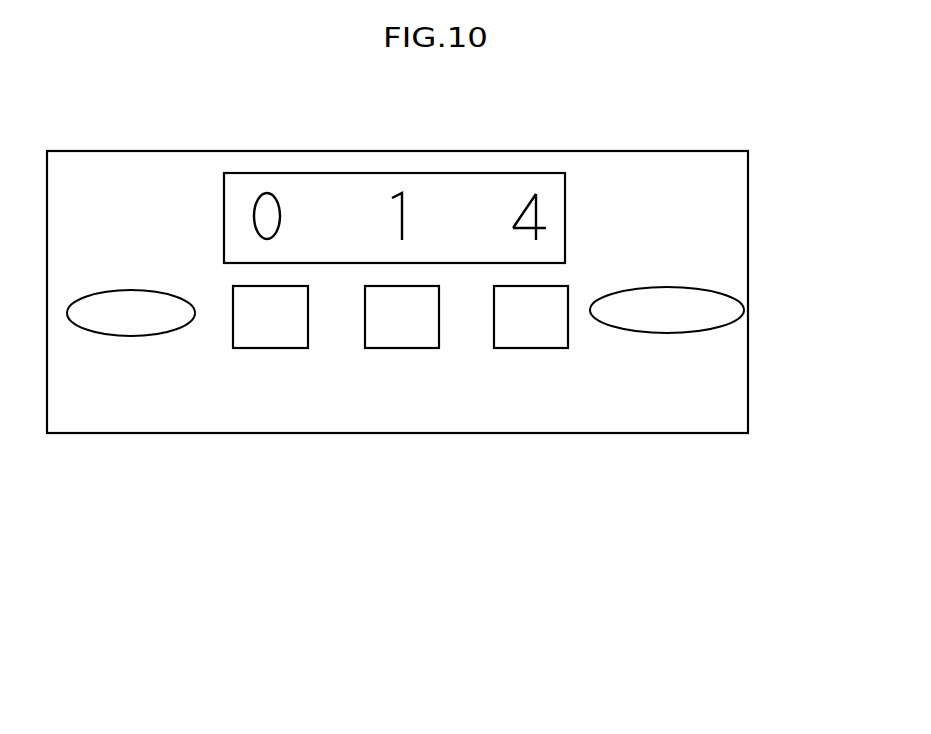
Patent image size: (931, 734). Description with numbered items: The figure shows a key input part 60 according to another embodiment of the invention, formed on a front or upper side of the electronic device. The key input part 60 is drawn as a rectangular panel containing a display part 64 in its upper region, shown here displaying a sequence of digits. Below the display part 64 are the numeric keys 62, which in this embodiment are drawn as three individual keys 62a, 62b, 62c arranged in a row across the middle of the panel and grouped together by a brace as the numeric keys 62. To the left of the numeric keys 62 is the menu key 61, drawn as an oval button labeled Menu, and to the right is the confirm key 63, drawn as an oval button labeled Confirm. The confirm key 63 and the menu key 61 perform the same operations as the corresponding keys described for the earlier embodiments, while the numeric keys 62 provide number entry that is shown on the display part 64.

The key input part 60 is at (748, 248).
The menu key 61 is at (129, 337).
The numeric keys 62 is at (405, 435).
The numeric key 62a is at (271, 348).
The numeric key 62b is at (402, 348).
The numeric key 62c is at (535, 396).
The confirm key 63 is at (670, 333).
The display part 64 is at (568, 217).